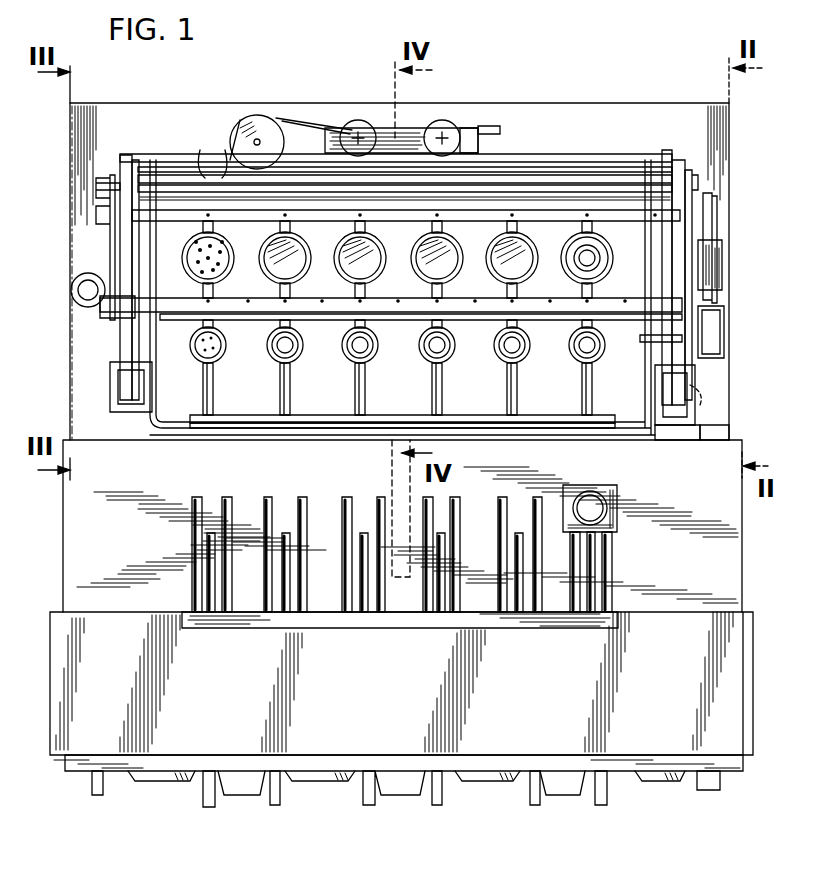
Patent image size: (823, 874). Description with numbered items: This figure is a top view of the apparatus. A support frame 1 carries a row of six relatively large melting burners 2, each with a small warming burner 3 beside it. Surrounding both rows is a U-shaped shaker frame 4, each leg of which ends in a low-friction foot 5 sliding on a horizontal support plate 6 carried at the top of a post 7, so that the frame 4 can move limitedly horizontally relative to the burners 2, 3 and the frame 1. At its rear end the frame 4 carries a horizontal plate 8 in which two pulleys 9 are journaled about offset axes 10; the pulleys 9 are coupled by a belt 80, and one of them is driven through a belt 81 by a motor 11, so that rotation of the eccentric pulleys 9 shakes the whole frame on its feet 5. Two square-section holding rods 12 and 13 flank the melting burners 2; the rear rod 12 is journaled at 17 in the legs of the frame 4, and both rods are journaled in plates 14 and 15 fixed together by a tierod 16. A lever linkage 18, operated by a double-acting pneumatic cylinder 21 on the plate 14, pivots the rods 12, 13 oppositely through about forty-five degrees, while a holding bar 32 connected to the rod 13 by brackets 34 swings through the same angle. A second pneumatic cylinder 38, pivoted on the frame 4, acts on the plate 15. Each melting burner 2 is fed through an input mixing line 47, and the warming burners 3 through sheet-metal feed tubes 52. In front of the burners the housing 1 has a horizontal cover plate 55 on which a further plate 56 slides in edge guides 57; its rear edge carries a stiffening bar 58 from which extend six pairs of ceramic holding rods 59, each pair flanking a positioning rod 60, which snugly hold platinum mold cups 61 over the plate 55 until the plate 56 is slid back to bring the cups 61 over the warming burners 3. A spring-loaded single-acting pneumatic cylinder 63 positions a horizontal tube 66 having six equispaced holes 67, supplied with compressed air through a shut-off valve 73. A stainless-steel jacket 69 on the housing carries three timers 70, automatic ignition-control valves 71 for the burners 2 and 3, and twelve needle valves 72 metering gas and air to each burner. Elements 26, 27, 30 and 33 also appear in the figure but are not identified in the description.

The support frame 1 is at (585, 103).
The melting burners 2 is at (487, 256).
The warming burners 3 is at (372, 350).
The shaker frame 4 is at (170, 160).
The foot 5 is at (112, 392).
The horizontal support plate 6 is at (672, 430).
The post 7 is at (700, 430).
The horizontal plate 8 is at (470, 135).
The pulleys 9 is at (362, 150).
The offset axes 10 is at (352, 122).
The motor 11 is at (258, 116).
The holding rod 12 is at (316, 313).
The holding rod 13 is at (605, 207).
The plate 14 is at (692, 226).
The plate 15 is at (108, 258).
The tierod 16 is at (480, 128).
The journal 17 is at (585, 342).
The lever linkage 18 is at (725, 250).
The double-acting pneumatic cylinder 21 is at (722, 313).
The upper rail 26 is at (520, 200).
The rail strip 27 is at (497, 320).
The end roller 30 is at (598, 258).
The holding bar 32 is at (645, 157).
The left end region 33 is at (225, 150).
The brackets 34 is at (122, 168).
The double-acting pneumatic cylinder 38 is at (80, 292).
The input mixing line 47 is at (212, 300).
The feed tubes 52 is at (225, 385).
The horizontal cover plate 55 is at (713, 547).
The sliding plate 56 is at (705, 718).
The edge guides 57 is at (65, 688).
The stiffening bar 58 is at (410, 628).
The holding rods 59 is at (300, 497).
The positioning rod 60 is at (287, 548).
The mold cups 61 is at (616, 494).
The spring-loaded pneumatic cylinder 63 is at (392, 472).
The tube 66 is at (330, 412).
The holes 67 is at (460, 428).
The stainless-steel jacket 69 is at (178, 440).
The timers 70 is at (170, 783).
The automatic ignition-control valves 71 is at (245, 792).
The needle valves 72 is at (368, 805).
The shut-off valve 73 is at (97, 795).
The belt 80 is at (385, 128).
The belt 81 is at (297, 118).